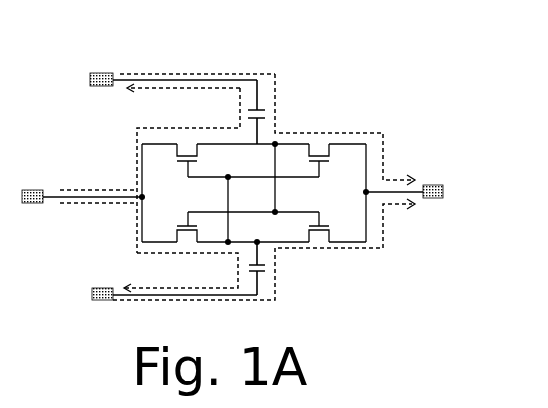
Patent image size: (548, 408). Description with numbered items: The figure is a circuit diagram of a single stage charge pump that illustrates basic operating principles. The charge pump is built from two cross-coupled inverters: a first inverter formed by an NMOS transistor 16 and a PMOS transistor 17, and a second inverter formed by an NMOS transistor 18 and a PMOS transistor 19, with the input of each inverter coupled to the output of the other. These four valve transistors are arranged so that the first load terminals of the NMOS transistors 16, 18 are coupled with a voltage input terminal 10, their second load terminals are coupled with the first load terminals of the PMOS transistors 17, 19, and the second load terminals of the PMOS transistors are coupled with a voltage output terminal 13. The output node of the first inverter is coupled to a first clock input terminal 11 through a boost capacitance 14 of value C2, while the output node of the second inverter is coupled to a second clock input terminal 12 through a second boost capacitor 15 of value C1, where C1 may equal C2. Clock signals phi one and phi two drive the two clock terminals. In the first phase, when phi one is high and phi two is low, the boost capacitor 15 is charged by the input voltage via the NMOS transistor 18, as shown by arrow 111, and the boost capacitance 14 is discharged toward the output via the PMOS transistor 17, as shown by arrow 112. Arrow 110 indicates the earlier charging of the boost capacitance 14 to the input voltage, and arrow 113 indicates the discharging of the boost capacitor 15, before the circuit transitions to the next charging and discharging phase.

The voltage input terminal 10 is at (43, 189).
The first clock input terminal 11 is at (100, 86).
The second clock input terminal 12 is at (94, 287).
The voltage output terminal 13 is at (428, 198).
The boost capacitance 14 is at (257, 110).
The second boost capacitor 15 is at (262, 272).
The NMOS transistor 16 is at (177, 155).
The PMOS transistor 17 is at (328, 155).
The NMOS transistor 18 is at (177, 242).
The PMOS transistor 19 is at (329, 241).
The arrow 110 is at (168, 88).
The arrow 111 is at (188, 253).
The arrow 112 is at (297, 133).
The arrow 113 is at (382, 237).